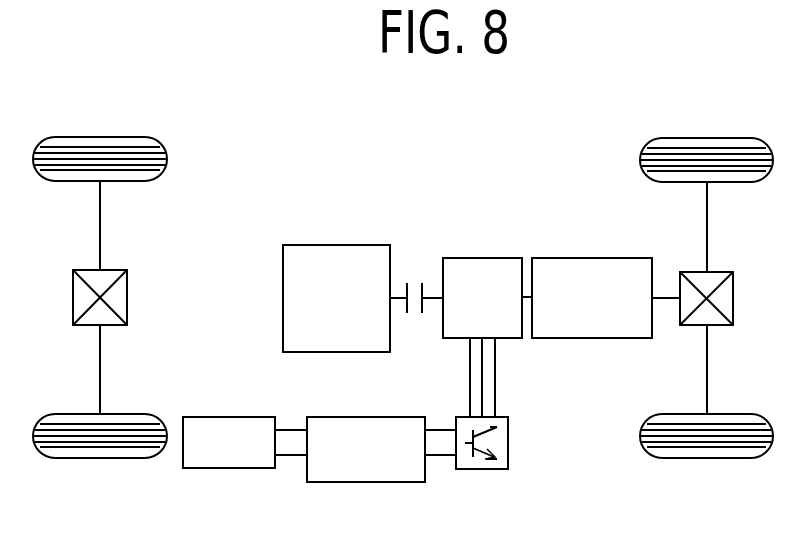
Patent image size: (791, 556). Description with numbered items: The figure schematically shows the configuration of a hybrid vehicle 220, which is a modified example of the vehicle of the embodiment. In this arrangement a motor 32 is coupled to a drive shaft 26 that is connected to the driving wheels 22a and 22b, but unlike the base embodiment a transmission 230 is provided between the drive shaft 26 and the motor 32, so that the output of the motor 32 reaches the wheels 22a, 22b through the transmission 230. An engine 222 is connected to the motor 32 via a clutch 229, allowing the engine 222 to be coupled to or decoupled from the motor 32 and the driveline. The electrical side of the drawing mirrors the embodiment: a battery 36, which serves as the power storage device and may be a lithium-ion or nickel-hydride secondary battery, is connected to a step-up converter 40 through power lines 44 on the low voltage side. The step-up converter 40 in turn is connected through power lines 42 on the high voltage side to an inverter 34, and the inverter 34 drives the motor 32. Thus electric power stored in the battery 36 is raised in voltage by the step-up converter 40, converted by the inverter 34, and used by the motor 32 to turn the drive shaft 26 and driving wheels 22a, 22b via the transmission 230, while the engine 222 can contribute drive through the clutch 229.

The hybrid vehicle 220 is at (567, 126).
The driving wheel 22a is at (707, 137).
The driving wheel 22b is at (706, 460).
The drive shaft 26 is at (662, 296).
The engine 222 is at (337, 244).
The clutch 229 is at (415, 281).
The motor 32 is at (481, 257).
The transmission 230 is at (587, 257).
The battery 36 is at (232, 416).
The power lines 44 is at (288, 437).
The step-up converter 40 is at (364, 416).
The power lines 42 is at (441, 452).
The inverter 34 is at (511, 440).